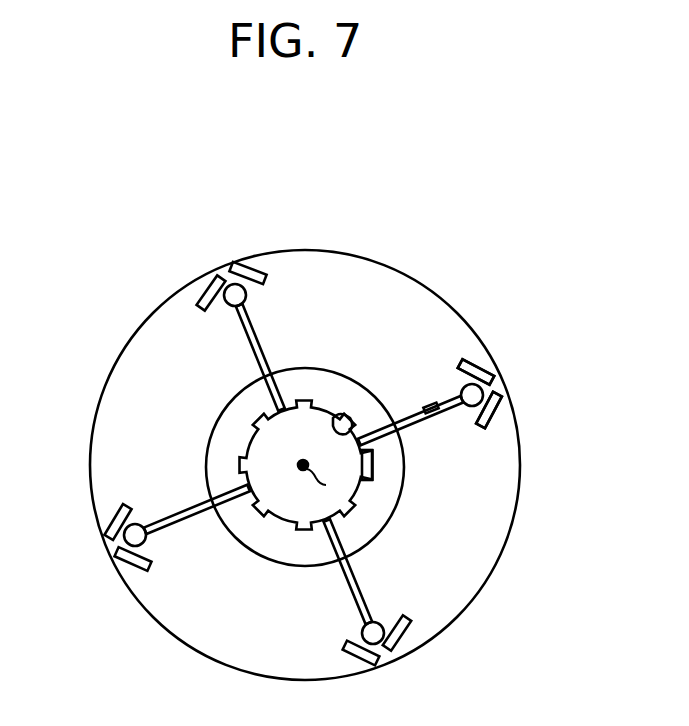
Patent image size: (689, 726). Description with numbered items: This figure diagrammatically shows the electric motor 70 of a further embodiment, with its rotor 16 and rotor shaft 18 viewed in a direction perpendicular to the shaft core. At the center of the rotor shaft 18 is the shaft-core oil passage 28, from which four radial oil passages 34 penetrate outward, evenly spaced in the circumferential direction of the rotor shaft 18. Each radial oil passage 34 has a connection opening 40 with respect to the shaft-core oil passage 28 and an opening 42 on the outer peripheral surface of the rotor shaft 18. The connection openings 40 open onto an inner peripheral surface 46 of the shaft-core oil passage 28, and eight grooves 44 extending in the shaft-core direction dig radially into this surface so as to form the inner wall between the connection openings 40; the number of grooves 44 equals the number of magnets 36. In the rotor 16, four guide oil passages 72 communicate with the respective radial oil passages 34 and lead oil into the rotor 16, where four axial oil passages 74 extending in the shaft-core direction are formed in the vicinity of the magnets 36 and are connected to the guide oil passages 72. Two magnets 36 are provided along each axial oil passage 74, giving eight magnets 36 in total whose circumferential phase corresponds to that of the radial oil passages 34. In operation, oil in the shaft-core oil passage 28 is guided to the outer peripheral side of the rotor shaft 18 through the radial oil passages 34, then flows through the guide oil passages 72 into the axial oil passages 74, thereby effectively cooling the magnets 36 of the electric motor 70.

The electric motor 70 is at (269, 456).
The rotor 16 is at (108, 462).
The rotor shaft 18 is at (228, 428).
The shaft-core oil passage 28 is at (303, 505).
The connection opening 40 is at (352, 443).
The inner peripheral surface 46 is at (340, 416).
The opening 42 is at (393, 427).
The radial oil passage 34 is at (375, 431).
The groove 44 is at (364, 482).
The guide oil passage 72 is at (478, 363).
The axial oil passage 74 is at (497, 408).
The magnet 36 is at (493, 371).